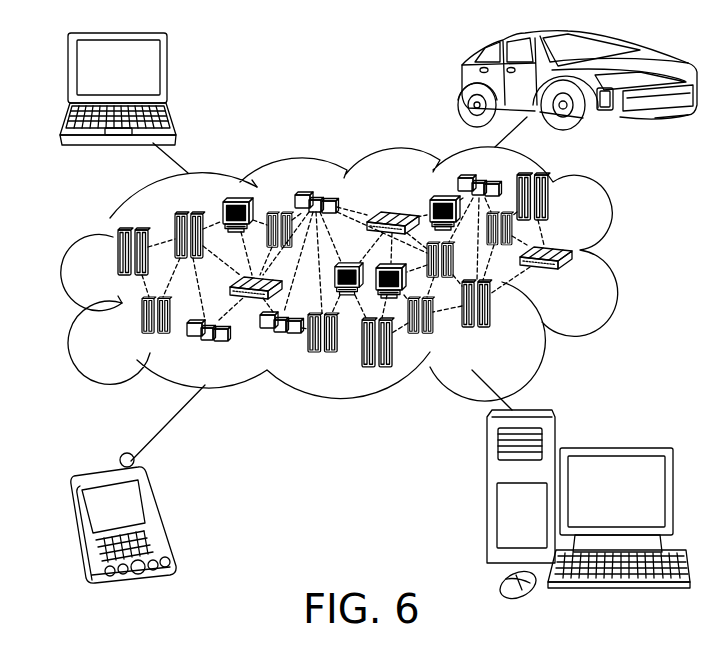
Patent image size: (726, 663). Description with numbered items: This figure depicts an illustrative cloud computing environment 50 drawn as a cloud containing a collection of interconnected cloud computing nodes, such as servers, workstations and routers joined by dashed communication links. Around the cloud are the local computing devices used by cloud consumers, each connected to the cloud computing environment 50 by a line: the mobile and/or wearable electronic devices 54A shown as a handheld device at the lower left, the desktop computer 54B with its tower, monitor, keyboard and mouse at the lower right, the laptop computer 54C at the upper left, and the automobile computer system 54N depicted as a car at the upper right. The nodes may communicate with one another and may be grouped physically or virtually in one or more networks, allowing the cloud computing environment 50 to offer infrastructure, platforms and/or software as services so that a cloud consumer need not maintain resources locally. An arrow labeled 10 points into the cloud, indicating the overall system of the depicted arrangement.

The system 10 is at (580, 276).
The cloud computing environment 50 is at (358, 274).
The mobile and/or wearable electronic devices 54A is at (163, 515).
The desktop computer 54B is at (614, 447).
The laptop computer 54C is at (168, 73).
The automobile computer system 54N is at (462, 82).